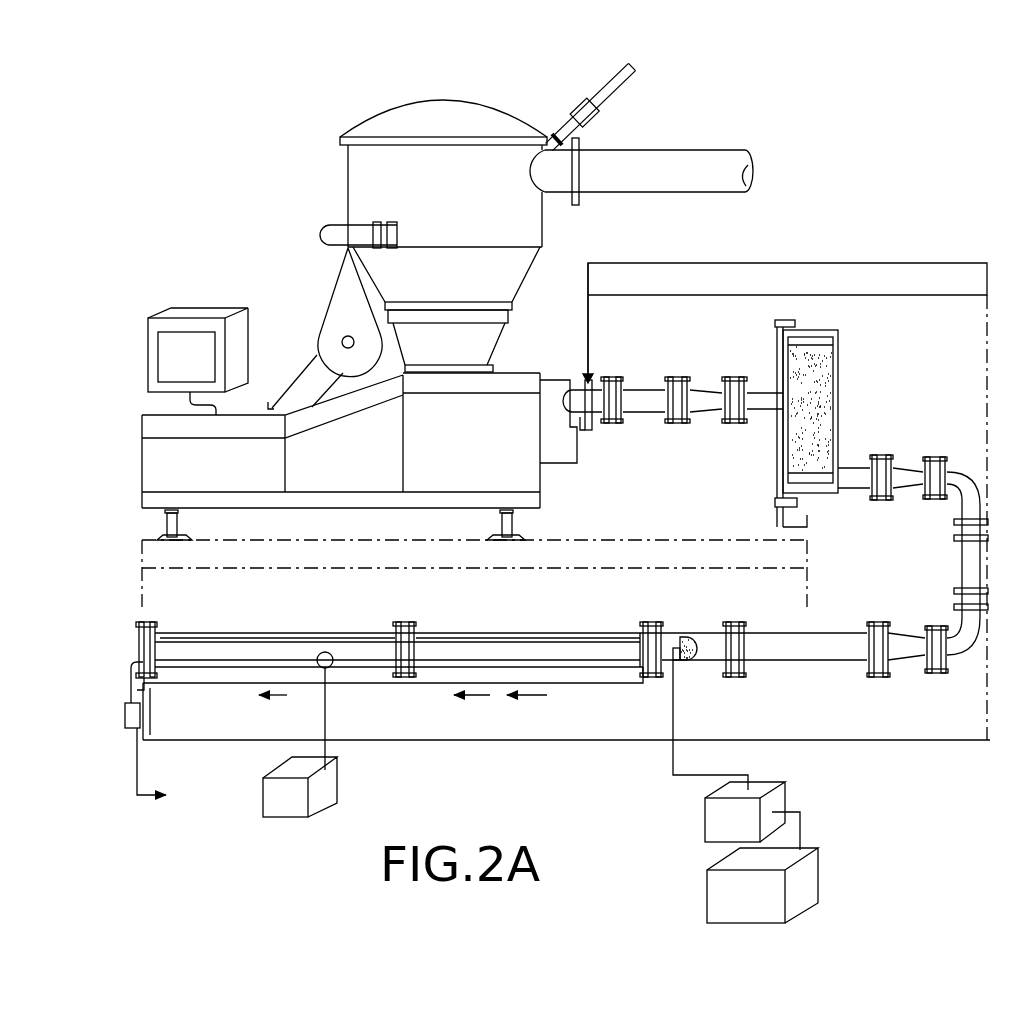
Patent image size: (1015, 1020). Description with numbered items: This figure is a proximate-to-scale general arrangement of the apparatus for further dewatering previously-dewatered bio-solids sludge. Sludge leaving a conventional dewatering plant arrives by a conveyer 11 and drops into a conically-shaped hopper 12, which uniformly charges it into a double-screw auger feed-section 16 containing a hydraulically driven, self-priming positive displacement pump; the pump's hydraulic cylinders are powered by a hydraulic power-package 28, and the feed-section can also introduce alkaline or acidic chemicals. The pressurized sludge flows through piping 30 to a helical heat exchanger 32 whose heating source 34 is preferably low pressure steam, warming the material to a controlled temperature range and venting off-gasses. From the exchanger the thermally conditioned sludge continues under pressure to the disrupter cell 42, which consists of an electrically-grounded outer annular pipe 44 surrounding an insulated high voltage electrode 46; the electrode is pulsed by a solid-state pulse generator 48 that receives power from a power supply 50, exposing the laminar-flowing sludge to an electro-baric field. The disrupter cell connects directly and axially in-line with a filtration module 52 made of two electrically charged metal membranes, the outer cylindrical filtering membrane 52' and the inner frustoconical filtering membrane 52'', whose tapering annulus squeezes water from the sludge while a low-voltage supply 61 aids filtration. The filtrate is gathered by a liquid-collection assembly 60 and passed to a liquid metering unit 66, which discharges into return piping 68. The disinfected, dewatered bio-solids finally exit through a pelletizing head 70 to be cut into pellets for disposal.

The conveyer 11 is at (646, 150).
The conically-shaped hopper 12 is at (510, 272).
The double-screw auger feed-section 16 is at (455, 458).
The hydraulic power-package 28 is at (219, 303).
The piping 30 is at (638, 414).
The helical heat exchanger 32 is at (835, 328).
The heating source 34 is at (787, 318).
The disrupter cell 42 is at (713, 625).
The annular pipe 44 is at (686, 636).
The high voltage electrode 46 is at (695, 665).
The pulse generator 48 is at (705, 825).
The power supply 50 is at (707, 902).
The filtration module 52 is at (399, 623).
The outer filtering membrane 52' is at (364, 612).
The inner filtering membrane 52'' is at (539, 632).
The liquid-collection assembly 60 is at (222, 675).
The low-voltage supply 61 is at (300, 734).
The liquid metering unit 66 is at (120, 715).
The return piping 68 is at (173, 769).
The pelletizing head 70 is at (166, 620).